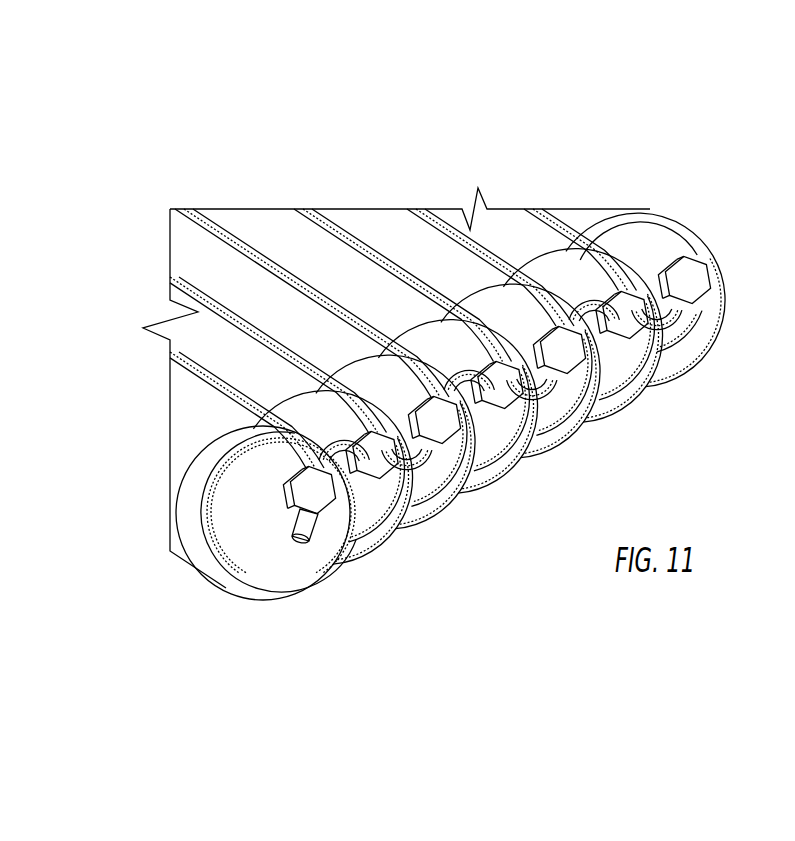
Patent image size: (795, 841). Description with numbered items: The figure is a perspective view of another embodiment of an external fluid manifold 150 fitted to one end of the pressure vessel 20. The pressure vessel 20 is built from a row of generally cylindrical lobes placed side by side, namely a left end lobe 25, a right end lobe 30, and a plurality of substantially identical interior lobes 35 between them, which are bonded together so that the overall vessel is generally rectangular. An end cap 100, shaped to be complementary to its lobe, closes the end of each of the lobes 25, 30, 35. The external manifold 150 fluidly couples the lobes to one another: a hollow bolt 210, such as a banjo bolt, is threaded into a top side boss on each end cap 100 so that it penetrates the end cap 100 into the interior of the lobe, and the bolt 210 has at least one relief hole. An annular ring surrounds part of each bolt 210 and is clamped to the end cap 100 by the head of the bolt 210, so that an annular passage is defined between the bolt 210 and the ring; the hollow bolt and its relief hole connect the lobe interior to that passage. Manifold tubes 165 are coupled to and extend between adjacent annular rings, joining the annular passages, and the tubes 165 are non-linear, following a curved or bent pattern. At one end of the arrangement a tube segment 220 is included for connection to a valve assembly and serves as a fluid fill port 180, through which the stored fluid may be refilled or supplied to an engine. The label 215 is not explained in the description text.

The pressure vessel 20 is at (168, 168).
The left end lobe 25 is at (192, 422).
The right end lobe 30 is at (590, 222).
The interior lobe 35 is at (370, 223).
The end cap 100 is at (245, 557).
The external manifold 150 is at (542, 472).
The manifold tube 165 is at (665, 333).
The fluid fill port 180 is at (297, 547).
The bolt 210 is at (691, 268).
The nut side face 215 is at (700, 283).
The tube segment 220 is at (303, 523).